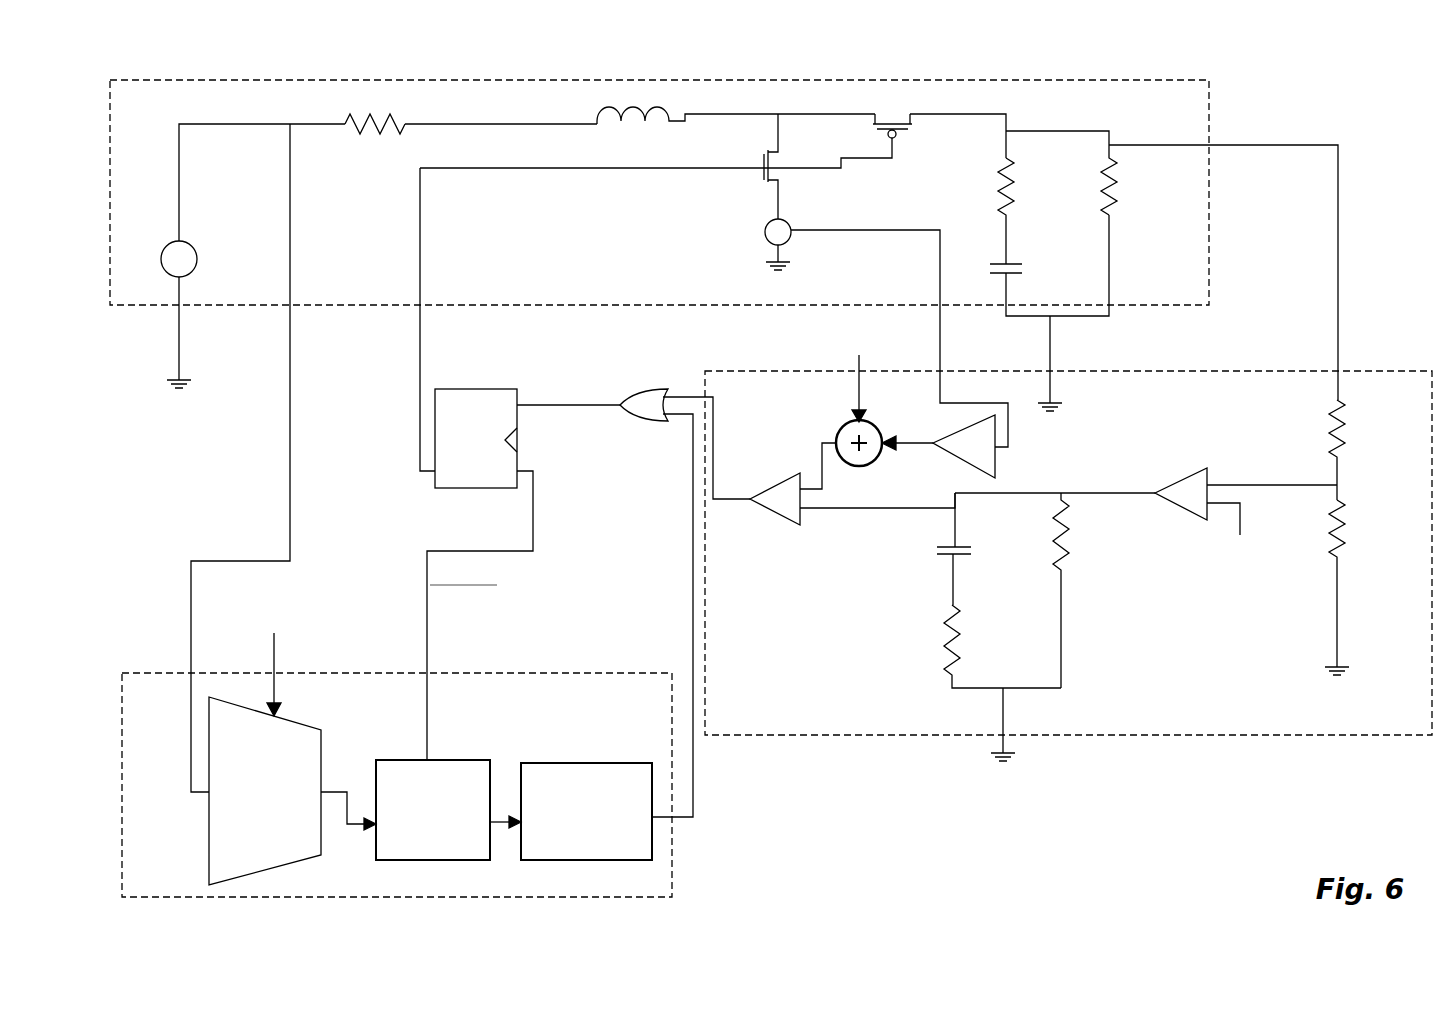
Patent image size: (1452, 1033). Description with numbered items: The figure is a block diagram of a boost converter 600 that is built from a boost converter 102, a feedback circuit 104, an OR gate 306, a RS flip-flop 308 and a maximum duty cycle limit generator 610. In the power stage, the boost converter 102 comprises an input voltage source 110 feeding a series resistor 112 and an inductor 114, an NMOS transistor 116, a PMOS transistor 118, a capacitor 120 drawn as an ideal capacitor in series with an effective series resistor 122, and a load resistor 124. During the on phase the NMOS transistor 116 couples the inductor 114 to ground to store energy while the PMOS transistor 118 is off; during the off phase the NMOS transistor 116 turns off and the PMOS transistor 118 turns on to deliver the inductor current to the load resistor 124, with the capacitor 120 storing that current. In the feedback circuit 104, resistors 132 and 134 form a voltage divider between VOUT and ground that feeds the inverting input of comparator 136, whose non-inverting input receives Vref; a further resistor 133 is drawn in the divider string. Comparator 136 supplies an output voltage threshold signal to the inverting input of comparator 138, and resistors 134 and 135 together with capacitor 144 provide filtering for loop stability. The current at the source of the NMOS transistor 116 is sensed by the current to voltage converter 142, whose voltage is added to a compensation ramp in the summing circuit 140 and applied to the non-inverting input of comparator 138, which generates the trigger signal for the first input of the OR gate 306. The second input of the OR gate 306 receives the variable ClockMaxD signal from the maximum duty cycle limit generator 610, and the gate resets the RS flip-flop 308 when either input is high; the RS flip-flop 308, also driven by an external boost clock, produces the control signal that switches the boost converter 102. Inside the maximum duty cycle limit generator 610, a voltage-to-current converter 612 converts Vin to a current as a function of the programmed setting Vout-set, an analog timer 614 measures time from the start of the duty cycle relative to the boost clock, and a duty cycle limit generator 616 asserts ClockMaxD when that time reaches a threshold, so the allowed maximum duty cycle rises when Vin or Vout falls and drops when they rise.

The boost converter 600 is at (771, 458).
The boost converter 102 is at (372, 308).
The feedback circuit 104 is at (845, 737).
The input voltage source 110 is at (197, 262).
The series resistor 112 is at (348, 130).
The inductor 114 is at (609, 103).
The NMOS transistor 116 is at (757, 177).
The PMOS transistor 118 is at (890, 116).
The capacitor 120 is at (1015, 268).
The effective series resistor 122 is at (1003, 170).
The load resistor 124 is at (1118, 176).
The resistor 132 is at (1330, 418).
The feedback resistor 133 is at (1342, 524).
The resistor 134 is at (1075, 556).
The resistor 135 is at (958, 640).
The comparator 136 is at (1203, 510).
The comparator 138 is at (780, 520).
The summing circuit 140 is at (840, 431).
The current to voltage converter 142 is at (995, 460).
The capacitor 144 is at (936, 550).
The OR gate 306 is at (640, 395).
The RS flip-flop 308 is at (433, 487).
The maximum duty cycle limit generator 610 is at (688, 850).
The voltage-to-current converter 612 is at (290, 721).
The analog timer 614 is at (385, 760).
The duty cycle limit generator 616 is at (600, 762).